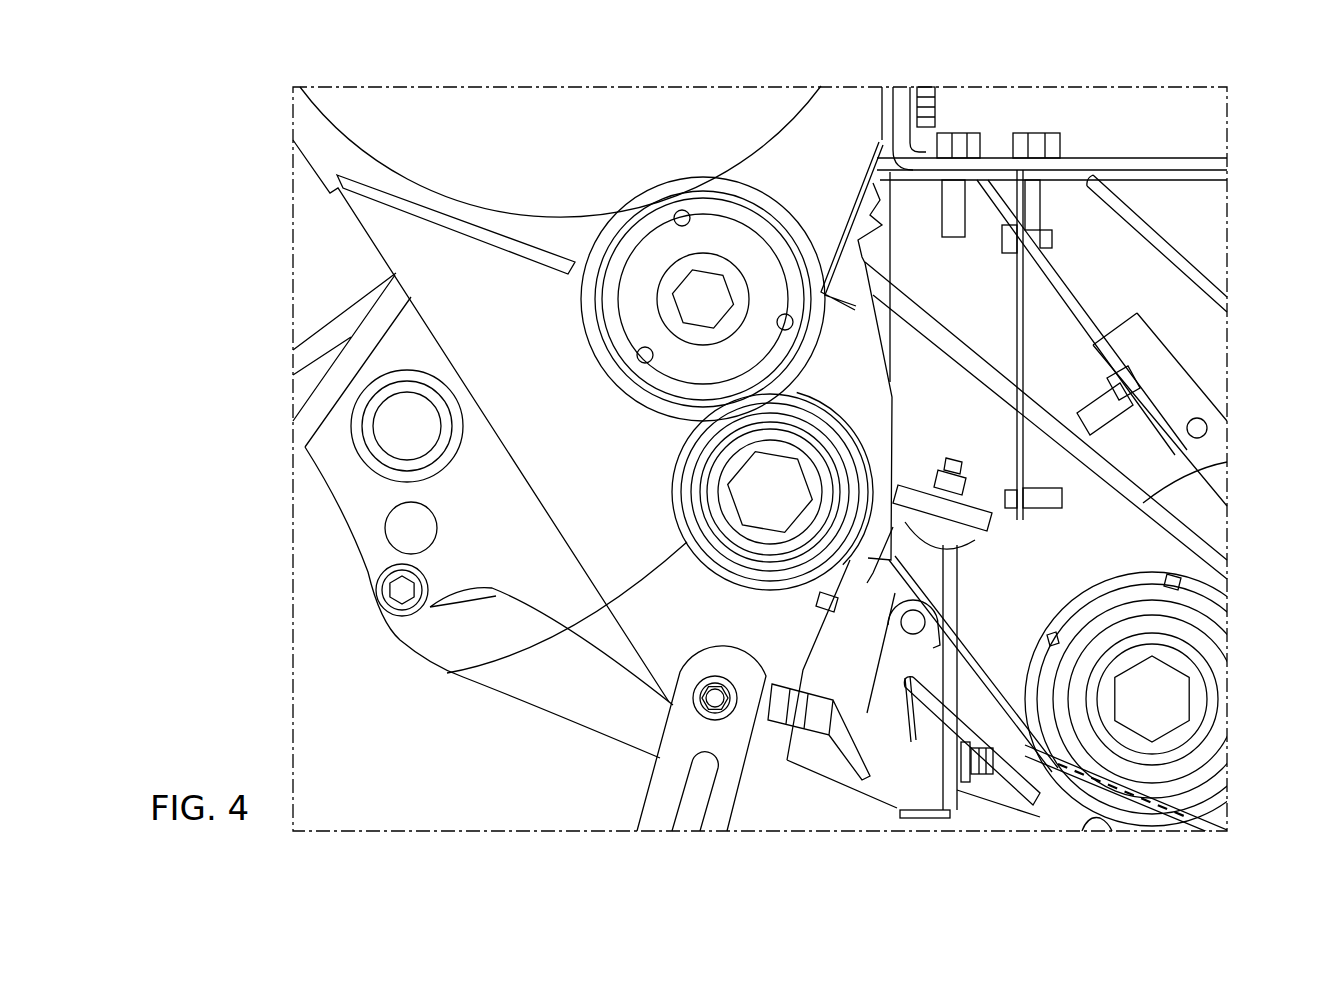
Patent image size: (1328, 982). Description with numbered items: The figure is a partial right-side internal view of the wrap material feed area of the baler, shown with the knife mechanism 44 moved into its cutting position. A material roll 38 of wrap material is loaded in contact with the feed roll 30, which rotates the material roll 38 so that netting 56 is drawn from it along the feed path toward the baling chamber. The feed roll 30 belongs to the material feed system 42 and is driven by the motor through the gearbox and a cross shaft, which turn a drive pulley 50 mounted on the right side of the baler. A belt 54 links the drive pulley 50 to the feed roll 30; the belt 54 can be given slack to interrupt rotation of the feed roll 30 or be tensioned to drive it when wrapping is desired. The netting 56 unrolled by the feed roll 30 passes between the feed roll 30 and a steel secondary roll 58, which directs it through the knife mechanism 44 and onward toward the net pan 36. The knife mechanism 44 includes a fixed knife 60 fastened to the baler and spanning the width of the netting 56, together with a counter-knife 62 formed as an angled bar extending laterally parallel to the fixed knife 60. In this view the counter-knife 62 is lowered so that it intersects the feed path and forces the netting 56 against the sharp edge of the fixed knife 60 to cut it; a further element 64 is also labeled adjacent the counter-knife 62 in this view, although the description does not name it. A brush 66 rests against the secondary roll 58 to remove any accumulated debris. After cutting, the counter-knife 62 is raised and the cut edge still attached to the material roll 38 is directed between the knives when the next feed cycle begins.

The feed roll 30 is at (780, 223).
The net pan 36 is at (1130, 832).
The material roll 38 is at (585, 160).
The material feed system 42 is at (1262, 737).
The knife mechanism 44 is at (812, 795).
The drive pulley 50 is at (1200, 787).
The belt 54 is at (1150, 500).
The netting 56 is at (985, 658).
The secondary roll 58 is at (447, 673).
The fixed knife 60 is at (915, 690).
The counter-knife 62 is at (963, 563).
The fastener 64 is at (963, 548).
The brush 66 is at (682, 658).